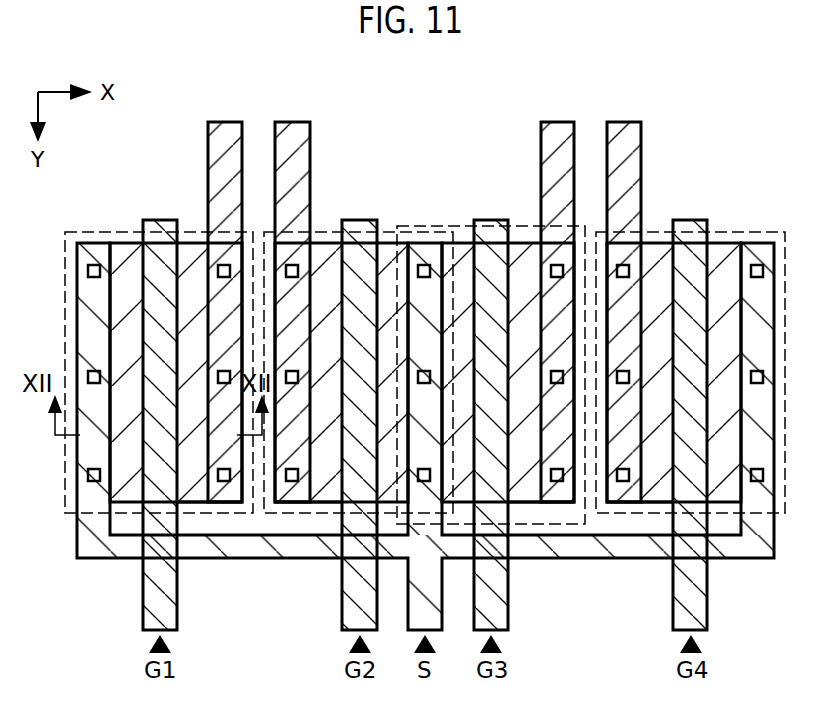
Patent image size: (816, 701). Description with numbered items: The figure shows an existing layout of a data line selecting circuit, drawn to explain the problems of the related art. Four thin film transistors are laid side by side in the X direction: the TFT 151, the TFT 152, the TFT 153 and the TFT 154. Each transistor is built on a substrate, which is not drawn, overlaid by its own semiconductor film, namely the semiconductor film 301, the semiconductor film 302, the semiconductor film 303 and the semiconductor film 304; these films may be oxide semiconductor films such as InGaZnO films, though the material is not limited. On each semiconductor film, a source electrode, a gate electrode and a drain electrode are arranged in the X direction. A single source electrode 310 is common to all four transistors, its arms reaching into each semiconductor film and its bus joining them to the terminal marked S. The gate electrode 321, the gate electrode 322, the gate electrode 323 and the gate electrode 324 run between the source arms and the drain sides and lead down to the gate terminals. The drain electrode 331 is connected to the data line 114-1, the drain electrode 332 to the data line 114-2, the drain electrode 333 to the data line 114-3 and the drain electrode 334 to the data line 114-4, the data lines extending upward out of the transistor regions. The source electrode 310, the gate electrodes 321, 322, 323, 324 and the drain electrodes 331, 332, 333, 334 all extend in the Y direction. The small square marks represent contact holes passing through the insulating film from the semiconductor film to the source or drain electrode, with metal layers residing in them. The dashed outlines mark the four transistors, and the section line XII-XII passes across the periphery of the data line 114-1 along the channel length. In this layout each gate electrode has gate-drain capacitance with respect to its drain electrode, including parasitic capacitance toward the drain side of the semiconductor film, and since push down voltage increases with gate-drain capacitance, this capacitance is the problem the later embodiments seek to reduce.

The data line 114-1 is at (212, 150).
The data line 114-2 is at (335, 127).
The data line 114-3 is at (547, 152).
The data line 114-4 is at (635, 150).
The TFT 151 is at (100, 232).
The TFT 152 is at (383, 232).
The TFT 153 is at (438, 226).
The TFT 154 is at (768, 228).
The semiconductor film 301 is at (133, 253).
The semiconductor film 302 is at (322, 257).
The semiconductor film 303 is at (527, 250).
The semiconductor film 304 is at (722, 252).
The source electrode 310 is at (77, 528).
The gate electrode 321 is at (148, 607).
The gate electrode 322 is at (345, 615).
The gate electrode 323 is at (502, 617).
The gate electrode 324 is at (700, 617).
The drain electrode 331 is at (229, 493).
The drain electrode 332 is at (293, 473).
The drain electrode 333 is at (560, 495).
The drain electrode 334 is at (622, 495).